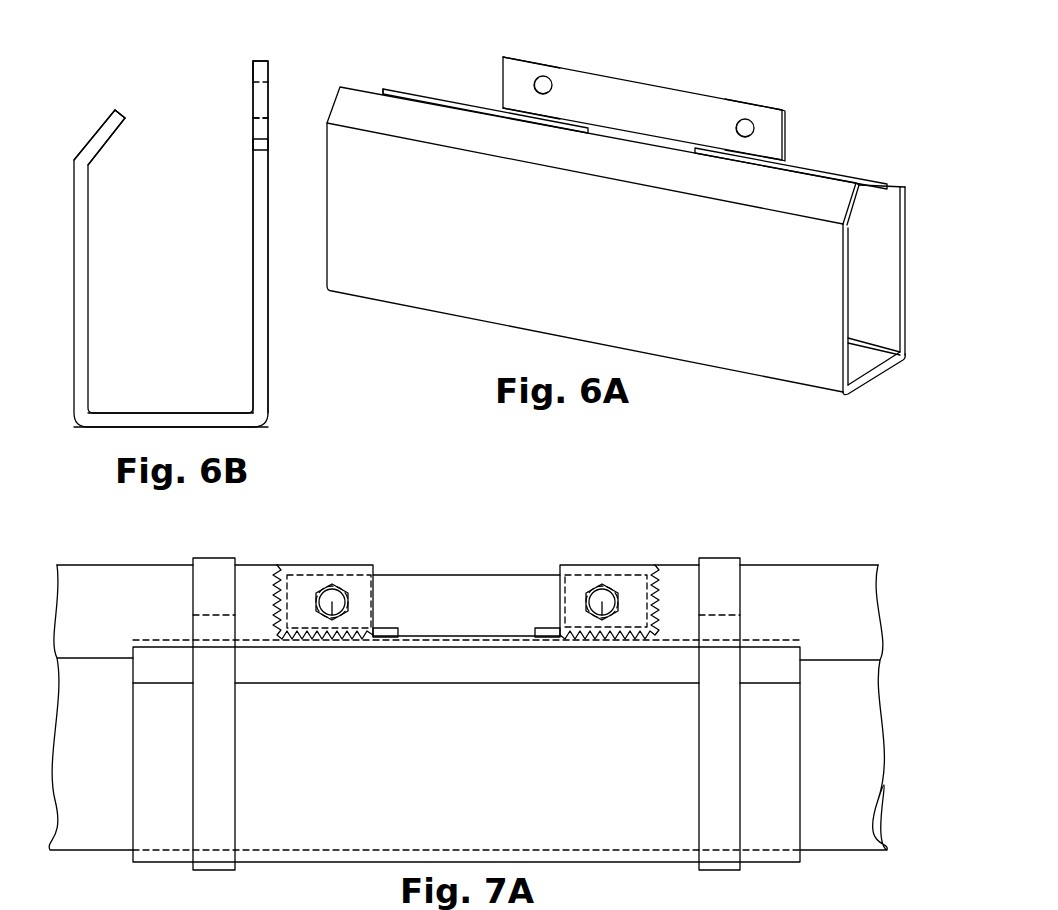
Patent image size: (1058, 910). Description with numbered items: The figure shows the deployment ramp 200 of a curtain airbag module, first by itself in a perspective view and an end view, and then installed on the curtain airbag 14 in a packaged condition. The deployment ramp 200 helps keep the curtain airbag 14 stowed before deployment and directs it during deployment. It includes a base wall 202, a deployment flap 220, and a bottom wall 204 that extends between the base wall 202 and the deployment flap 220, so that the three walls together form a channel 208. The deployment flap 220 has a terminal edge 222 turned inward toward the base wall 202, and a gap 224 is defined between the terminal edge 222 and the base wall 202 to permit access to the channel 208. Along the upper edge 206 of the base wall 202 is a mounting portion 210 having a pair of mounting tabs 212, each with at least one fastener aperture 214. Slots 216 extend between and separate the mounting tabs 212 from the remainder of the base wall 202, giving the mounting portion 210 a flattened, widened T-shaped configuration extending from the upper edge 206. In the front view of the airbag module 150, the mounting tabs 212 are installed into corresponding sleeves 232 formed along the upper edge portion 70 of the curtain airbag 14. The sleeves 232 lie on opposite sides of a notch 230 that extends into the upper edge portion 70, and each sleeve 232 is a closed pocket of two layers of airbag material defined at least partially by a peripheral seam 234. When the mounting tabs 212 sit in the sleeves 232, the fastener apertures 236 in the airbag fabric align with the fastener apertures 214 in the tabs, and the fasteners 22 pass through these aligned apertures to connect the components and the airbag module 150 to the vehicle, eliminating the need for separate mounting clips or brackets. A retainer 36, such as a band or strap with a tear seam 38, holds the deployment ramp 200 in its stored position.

In FIG. 7A, the curtain airbag 14 is at (855, 640).
In FIG. 7A, the fasteners 22 is at (333, 615).
In FIG. 7A, the retainer 36 is at (212, 760).
In FIG. 7A, the tear seam 38 is at (212, 614).
In FIG. 7A, the upper edge portion 70 is at (840, 590).
In FIG. 7A, the airbag module 150 is at (116, 538).
In FIG. 6A, the deployment ramp 200 is at (832, 106).
In FIG. 7A, the deployment ramp 200 is at (880, 544).
In FIG. 6B, the base wall 202 is at (260, 300).
In FIG. 6A, the base wall 202 is at (875, 212).
In FIG. 6B, the bottom wall 204 is at (180, 418).
In FIG. 6A, the bottom wall 204 is at (853, 365).
In FIG. 6A, the upper edge 206 is at (815, 167).
In FIG. 6B, the channel 208 is at (118, 275).
In FIG. 6A, the channel 208 is at (886, 274).
In FIG. 6B, the mounting portion 210 is at (258, 66).
In FIG. 6A, the mounting portion 210 is at (655, 108).
In FIG. 7A, the mounting portion 210 is at (462, 592).
In FIG. 6A, the mounting tabs 212 is at (517, 70).
In FIG. 7A, the mounting tabs 212 is at (384, 600).
In FIG. 6B, the fastener aperture 214 is at (258, 117).
In FIG. 6A, the fastener aperture 214 is at (552, 86).
In FIG. 6B, the slots 216 is at (256, 146).
In FIG. 6A, the slots 216 is at (540, 106).
In FIG. 7A, the slots 216 is at (385, 630).
In FIG. 6B, the deployment flap 220 is at (80, 246).
In FIG. 6A, the deployment flap 220 is at (508, 288).
In FIG. 6B, the terminal edge 222 is at (102, 130).
In FIG. 6A, the terminal edge 222 is at (363, 108).
In FIG. 6B, the gap 224 is at (163, 95).
In FIG. 6A, the gap 224 is at (428, 88).
In FIG. 7A, the notch 230 is at (500, 534).
In FIG. 7A, the sleeves 232 is at (312, 578).
In FIG. 7A, the peripheral seam 234 is at (277, 598).
In FIG. 7A, the fastener apertures 236 is at (330, 584).